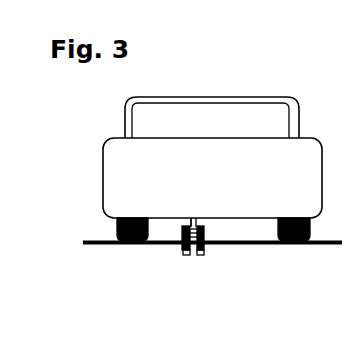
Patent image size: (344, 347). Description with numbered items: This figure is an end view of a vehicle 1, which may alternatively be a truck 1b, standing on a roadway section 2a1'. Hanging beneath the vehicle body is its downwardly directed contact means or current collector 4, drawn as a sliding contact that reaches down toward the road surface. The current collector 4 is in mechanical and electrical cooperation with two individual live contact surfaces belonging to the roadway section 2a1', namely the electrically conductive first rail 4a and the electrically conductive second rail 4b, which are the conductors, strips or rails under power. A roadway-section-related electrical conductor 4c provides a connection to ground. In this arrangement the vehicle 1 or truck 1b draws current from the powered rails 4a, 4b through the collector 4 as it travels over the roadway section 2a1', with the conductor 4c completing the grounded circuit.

The vehicle 1 is at (123, 160).
The truck 1b is at (175, 117).
The roadway section 2a1' is at (212, 261).
The current collector 4 is at (204, 234).
The electrical conductive first rail 4a is at (202, 255).
The electrical conductive second rail 4b is at (187, 255).
The roadway section related electrical conductor 4c is at (183, 232).